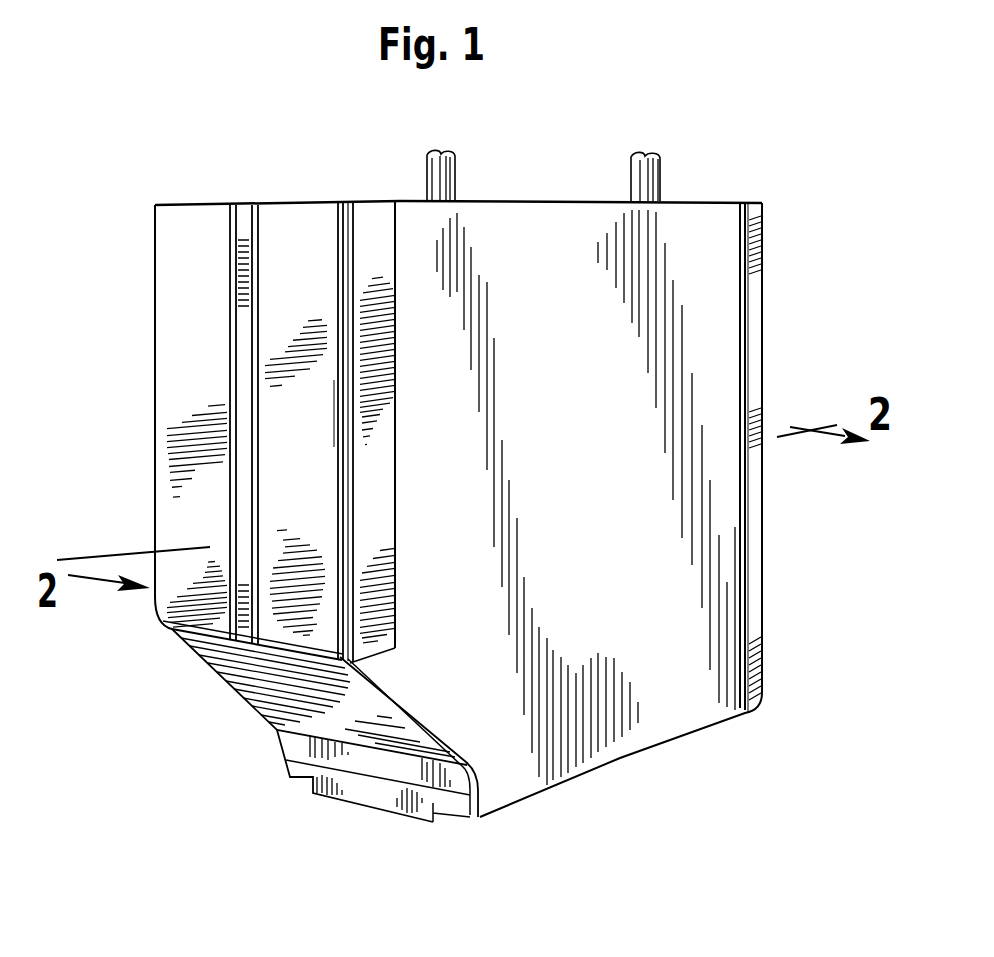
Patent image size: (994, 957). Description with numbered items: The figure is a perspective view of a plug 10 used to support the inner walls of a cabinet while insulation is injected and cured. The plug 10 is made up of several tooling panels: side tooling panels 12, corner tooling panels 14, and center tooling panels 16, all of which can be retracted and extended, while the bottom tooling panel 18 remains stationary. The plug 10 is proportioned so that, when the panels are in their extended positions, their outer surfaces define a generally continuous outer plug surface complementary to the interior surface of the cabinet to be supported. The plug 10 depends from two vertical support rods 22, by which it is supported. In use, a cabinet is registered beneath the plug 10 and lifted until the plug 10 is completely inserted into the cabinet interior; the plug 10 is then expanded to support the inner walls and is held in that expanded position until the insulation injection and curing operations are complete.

The plug 10 is at (786, 243).
The side tooling panel 12 is at (679, 714).
The corner tooling panel 14 is at (302, 228).
The center tooling panel 16 is at (240, 211).
The bottom tooling panel 18 is at (262, 676).
The vertical support rod 22 is at (643, 172).